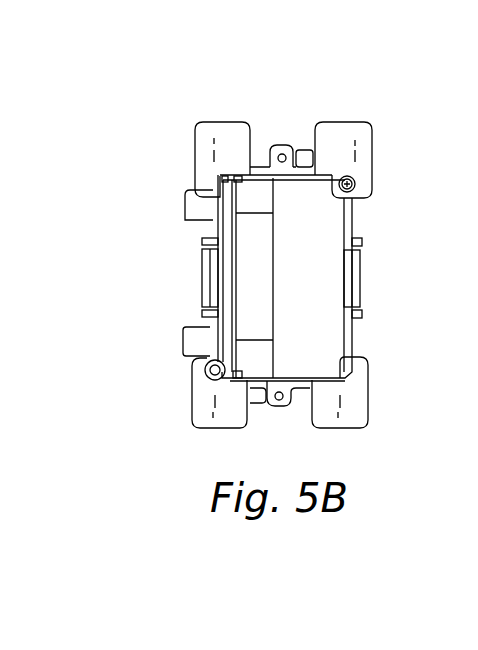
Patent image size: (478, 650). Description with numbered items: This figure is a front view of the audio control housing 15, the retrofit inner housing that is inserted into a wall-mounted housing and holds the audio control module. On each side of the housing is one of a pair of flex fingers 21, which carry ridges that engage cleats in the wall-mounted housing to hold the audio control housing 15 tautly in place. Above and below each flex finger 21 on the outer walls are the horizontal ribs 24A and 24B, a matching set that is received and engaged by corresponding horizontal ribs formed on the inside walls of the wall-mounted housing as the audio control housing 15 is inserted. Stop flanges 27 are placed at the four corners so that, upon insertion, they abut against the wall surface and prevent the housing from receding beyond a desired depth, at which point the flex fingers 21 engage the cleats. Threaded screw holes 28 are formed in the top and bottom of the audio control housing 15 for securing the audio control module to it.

The audio control housing 15 is at (353, 210).
The flex fingers 21 is at (202, 276).
The horizontal rib 24A is at (202, 242).
The horizontal rib 24B is at (202, 312).
The stop flanges 27 is at (217, 132).
The threaded screw holes 28 is at (282, 154).